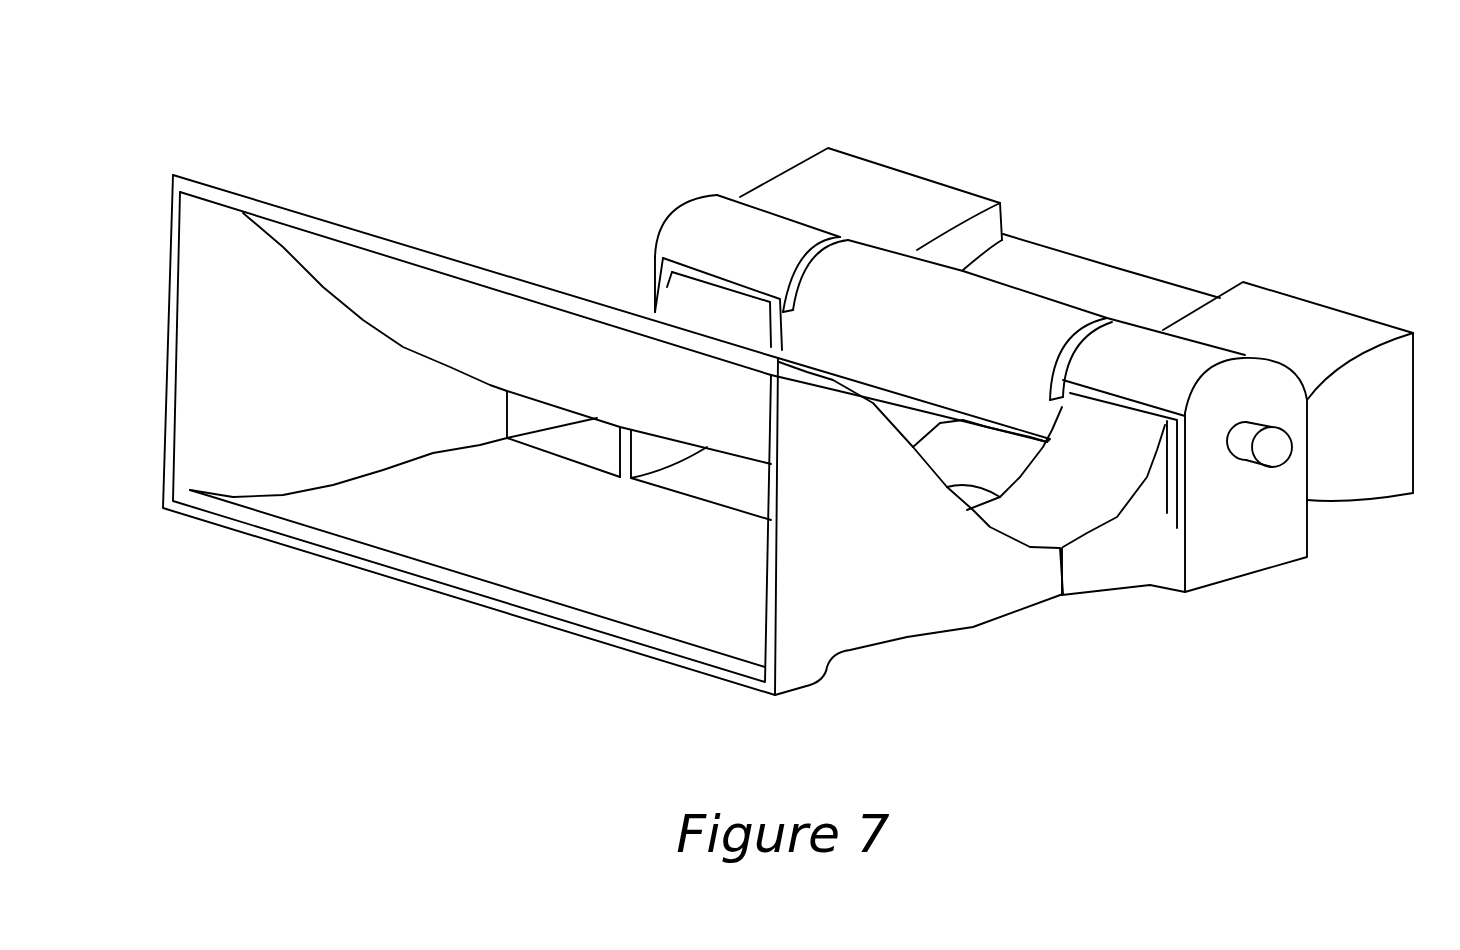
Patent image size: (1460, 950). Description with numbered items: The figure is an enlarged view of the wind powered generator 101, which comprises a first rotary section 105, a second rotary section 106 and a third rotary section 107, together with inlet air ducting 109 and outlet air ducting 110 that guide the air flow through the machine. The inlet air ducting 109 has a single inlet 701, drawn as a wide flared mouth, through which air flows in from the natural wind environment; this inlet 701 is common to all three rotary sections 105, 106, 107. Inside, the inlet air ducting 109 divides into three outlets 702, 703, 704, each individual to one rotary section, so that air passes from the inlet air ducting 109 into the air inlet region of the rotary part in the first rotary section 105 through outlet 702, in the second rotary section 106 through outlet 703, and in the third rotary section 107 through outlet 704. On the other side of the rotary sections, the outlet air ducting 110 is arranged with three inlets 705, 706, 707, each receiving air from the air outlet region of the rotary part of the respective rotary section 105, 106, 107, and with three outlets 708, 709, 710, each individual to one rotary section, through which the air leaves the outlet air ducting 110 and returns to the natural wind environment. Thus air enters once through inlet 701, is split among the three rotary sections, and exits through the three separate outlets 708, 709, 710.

The wind powered generator 101 is at (677, 207).
The first rotary section 105 is at (713, 230).
The second rotary section 106 is at (973, 303).
The third rotary section 107 is at (1168, 375).
The inlet air ducting 109 is at (427, 238).
The outlet air ducting 110 is at (1120, 253).
The inlet 701 is at (217, 303).
The outlet 702 is at (707, 285).
The outlet 703 is at (873, 383).
The outlet 704 is at (1165, 470).
The inlet 705 is at (787, 212).
The inlet 706 is at (1110, 317).
The inlet 707 is at (1297, 375).
The outlet 708 is at (880, 163).
The outlet 709 is at (1072, 250).
The outlet 710 is at (1312, 298).